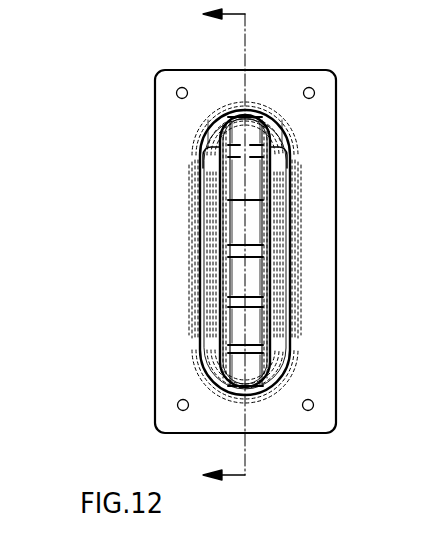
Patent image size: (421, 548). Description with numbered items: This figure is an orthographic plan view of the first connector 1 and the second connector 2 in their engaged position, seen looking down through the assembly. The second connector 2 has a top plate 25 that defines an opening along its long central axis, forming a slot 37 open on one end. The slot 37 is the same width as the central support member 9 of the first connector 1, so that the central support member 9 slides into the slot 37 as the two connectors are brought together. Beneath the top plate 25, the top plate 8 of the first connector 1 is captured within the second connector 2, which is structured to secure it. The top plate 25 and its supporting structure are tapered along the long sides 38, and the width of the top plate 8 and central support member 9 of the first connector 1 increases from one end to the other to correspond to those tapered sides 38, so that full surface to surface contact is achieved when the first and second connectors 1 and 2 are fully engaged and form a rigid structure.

The first connector 1 is at (277, 70).
The second connector 2 is at (215, 118).
The top plate 8 is at (283, 142).
The central support member 9 is at (268, 258).
The top plate 25 is at (207, 172).
The slot 37 is at (220, 232).
The tapered long sides 38 is at (198, 287).